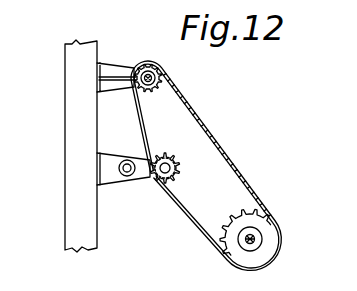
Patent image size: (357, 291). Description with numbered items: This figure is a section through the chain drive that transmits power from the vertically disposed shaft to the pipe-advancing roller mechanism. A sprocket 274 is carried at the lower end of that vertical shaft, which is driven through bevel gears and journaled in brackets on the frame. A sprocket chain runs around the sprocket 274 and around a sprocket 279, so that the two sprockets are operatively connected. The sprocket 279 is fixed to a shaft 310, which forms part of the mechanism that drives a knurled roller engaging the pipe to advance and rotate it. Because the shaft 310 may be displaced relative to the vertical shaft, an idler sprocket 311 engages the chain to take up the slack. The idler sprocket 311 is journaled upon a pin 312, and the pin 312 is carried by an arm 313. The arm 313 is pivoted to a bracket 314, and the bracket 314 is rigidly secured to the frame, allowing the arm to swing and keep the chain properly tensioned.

The sprocket 274 is at (164, 86).
The sprocket 279 is at (262, 223).
The shaft 310 is at (259, 236).
The idler sprocket 311 is at (181, 172).
The pin 312 is at (169, 172).
The arm 313 is at (146, 172).
The bracket 314 is at (116, 153).